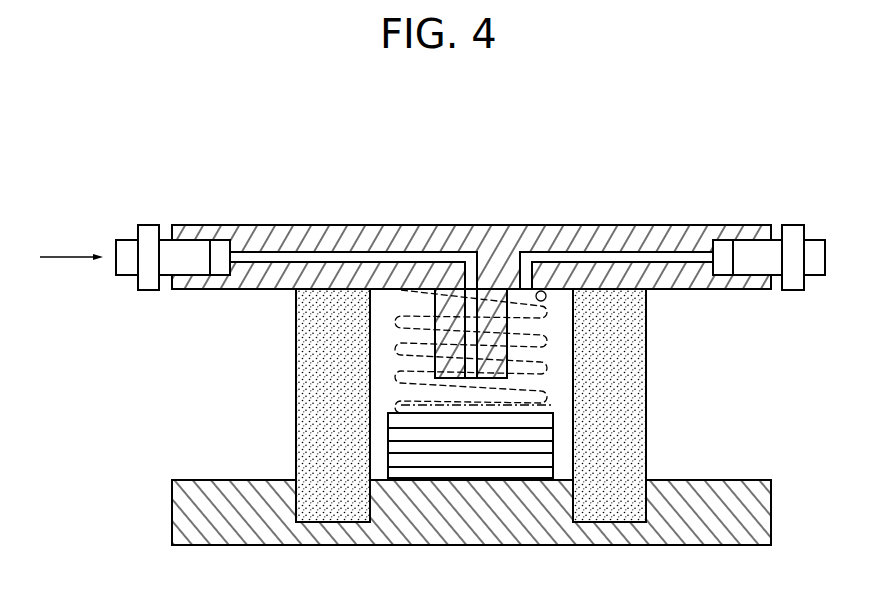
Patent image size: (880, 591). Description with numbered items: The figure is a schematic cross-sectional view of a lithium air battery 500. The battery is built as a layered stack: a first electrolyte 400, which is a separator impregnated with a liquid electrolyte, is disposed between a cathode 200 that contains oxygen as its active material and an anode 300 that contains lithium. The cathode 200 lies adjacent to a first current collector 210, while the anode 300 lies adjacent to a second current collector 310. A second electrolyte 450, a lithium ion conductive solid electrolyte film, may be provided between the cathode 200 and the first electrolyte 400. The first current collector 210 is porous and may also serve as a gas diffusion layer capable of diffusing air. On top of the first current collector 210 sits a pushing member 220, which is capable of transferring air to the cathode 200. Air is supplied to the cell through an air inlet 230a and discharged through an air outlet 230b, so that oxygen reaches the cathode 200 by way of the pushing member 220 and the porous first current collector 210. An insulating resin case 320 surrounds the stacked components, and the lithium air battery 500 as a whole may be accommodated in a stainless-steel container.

The lithium air battery 500 is at (152, 171).
The air inlet 230a is at (130, 268).
The air outlet 230b is at (813, 270).
The second current collector 310 is at (180, 512).
The insulating resin case 320 is at (306, 390).
The pushing member 220 is at (547, 341).
The first current collector 210 is at (545, 418).
The cathode 200 is at (545, 433).
The second electrolyte 450 is at (545, 447).
The first electrolyte 400 is at (545, 460).
The anode 300 is at (547, 473).